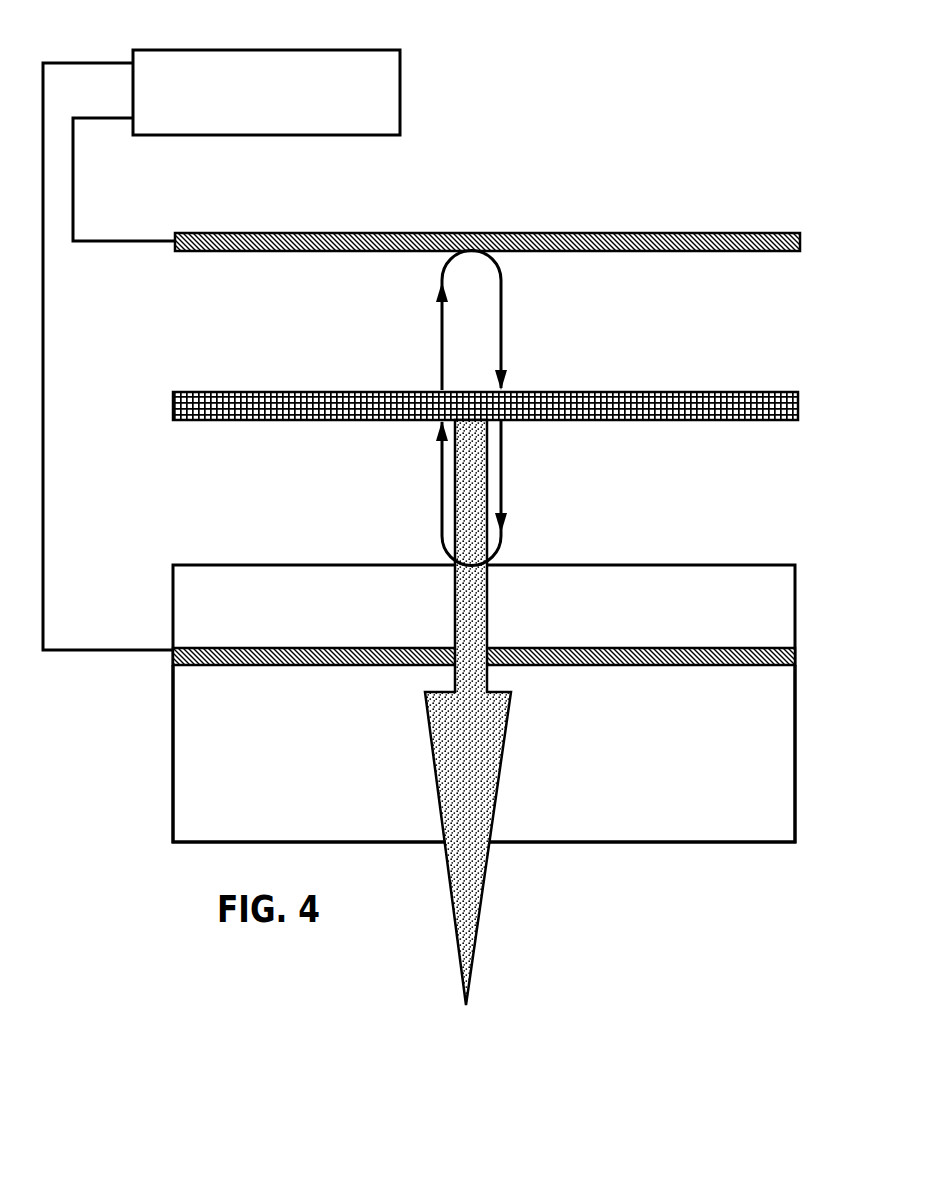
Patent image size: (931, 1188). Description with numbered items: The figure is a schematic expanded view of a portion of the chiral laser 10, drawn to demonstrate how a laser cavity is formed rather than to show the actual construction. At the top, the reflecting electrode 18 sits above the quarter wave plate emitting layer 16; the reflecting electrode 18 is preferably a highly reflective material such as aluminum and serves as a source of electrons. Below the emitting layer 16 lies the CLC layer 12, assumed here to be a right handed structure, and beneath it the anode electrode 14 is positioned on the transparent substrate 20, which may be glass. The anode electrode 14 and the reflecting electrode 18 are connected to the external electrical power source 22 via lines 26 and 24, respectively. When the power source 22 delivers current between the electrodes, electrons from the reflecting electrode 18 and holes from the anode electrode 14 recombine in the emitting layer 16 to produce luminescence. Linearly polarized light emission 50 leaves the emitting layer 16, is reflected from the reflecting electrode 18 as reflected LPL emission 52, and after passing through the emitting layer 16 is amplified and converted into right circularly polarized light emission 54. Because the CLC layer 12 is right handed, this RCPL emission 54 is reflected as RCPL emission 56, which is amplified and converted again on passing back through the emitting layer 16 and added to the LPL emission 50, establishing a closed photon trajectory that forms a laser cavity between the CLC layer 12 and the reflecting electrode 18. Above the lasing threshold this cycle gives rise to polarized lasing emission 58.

The chiral laser 10 is at (562, 137).
The CLC layer 12 is at (173, 570).
The anode electrode 14 is at (797, 651).
The quarter wave plate emitting layer 16 is at (800, 400).
The reflecting electrode 18 is at (742, 235).
The transparent substrate 20 is at (172, 722).
The external electrical power source 22 is at (345, 47).
The line 24 is at (73, 200).
The line 26 is at (42, 328).
The linearly polarized light emission 50 is at (440, 318).
The reflected LPL emission 52 is at (503, 303).
The right circularly polarized light emission 54 is at (503, 510).
The reflected RCPL emission 56 is at (440, 525).
The polarized lasing emission 58 is at (478, 908).